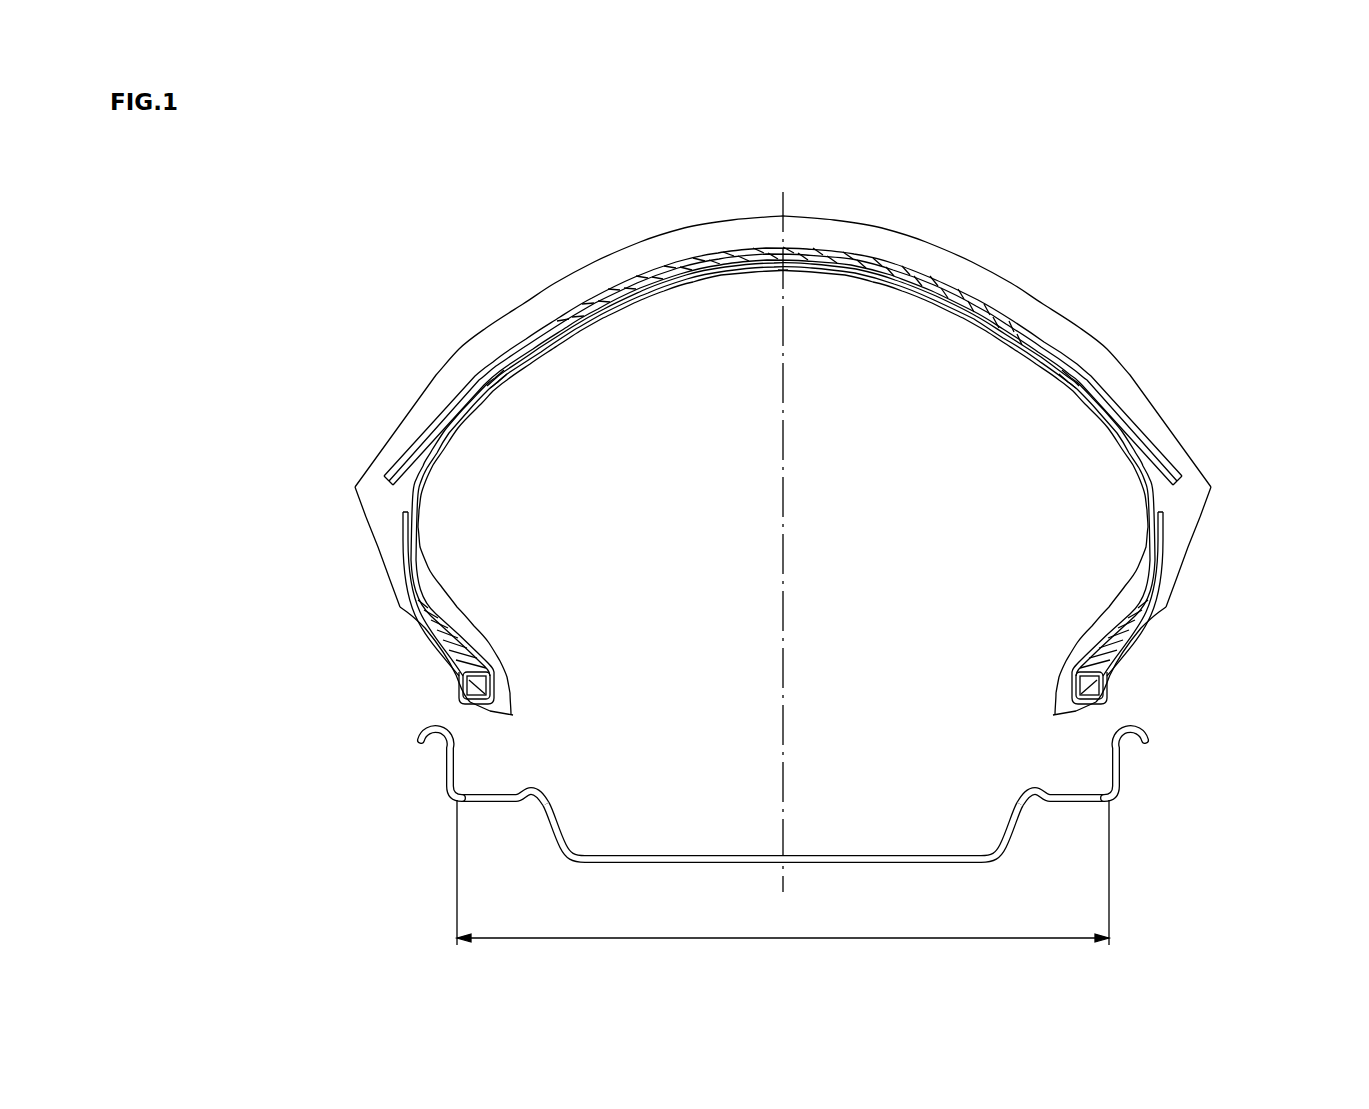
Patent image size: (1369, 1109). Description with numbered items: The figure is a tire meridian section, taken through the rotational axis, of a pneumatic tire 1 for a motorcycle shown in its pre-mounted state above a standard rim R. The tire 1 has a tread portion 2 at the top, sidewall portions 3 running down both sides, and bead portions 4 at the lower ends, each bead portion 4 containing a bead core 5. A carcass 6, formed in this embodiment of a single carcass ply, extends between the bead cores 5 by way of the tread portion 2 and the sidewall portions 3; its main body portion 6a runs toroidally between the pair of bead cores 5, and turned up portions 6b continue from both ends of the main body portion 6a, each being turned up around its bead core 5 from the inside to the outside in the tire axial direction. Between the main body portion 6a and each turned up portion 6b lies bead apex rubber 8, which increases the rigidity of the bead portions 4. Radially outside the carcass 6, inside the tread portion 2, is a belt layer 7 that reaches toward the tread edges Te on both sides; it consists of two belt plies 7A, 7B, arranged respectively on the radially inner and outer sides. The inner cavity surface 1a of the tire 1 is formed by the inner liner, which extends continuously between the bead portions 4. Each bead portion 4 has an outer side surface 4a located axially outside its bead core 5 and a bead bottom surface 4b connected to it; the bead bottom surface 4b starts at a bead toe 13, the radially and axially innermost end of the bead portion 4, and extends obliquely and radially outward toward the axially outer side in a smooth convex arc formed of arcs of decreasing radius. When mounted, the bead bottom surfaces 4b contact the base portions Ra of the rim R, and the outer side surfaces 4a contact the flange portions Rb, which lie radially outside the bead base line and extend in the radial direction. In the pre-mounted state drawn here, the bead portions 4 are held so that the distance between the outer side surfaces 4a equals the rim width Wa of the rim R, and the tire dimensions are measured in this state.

The pneumatic tire 1 is at (1232, 208).
The inner cavity surface 1a is at (840, 273).
The tread portion 2 is at (1075, 232).
The sidewall portion 3 is at (1211, 528).
The bead portion 4 is at (799, 698).
The outer side surface 4a is at (470, 684).
The bead bottom surface 4b is at (498, 715).
The bead toe 13 is at (1055, 715).
The bead core 5 is at (478, 686).
The carcass 6 is at (783, 483).
The main body portion 6a is at (1157, 512).
The turned up portion 6b is at (418, 558).
The belt layer 7 is at (783, 305).
The belt ply 7A is at (880, 262).
The belt ply 7B is at (977, 297).
The bead apex rubber 8 is at (1113, 651).
The tread edge Te is at (353, 485).
The rim R is at (789, 829).
The base portion Ra is at (437, 748).
The flange portion Rb is at (495, 802).
The rim width Wa is at (783, 886).